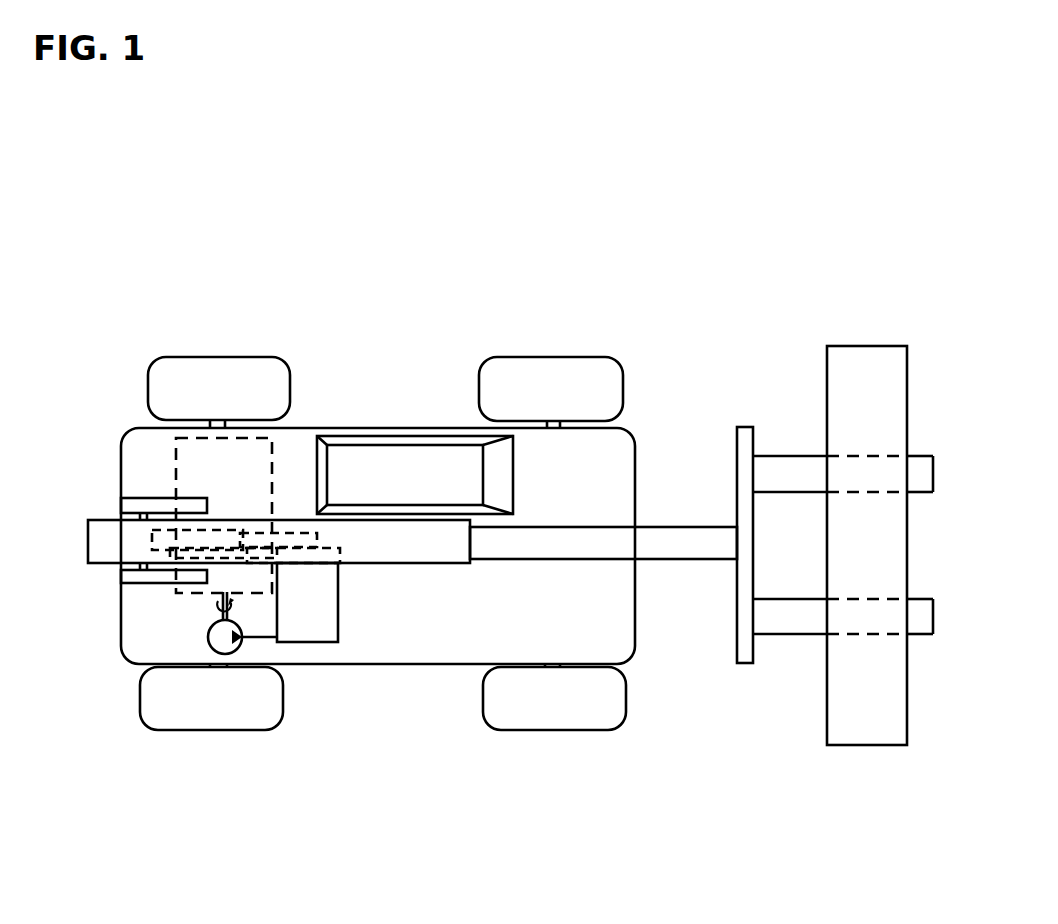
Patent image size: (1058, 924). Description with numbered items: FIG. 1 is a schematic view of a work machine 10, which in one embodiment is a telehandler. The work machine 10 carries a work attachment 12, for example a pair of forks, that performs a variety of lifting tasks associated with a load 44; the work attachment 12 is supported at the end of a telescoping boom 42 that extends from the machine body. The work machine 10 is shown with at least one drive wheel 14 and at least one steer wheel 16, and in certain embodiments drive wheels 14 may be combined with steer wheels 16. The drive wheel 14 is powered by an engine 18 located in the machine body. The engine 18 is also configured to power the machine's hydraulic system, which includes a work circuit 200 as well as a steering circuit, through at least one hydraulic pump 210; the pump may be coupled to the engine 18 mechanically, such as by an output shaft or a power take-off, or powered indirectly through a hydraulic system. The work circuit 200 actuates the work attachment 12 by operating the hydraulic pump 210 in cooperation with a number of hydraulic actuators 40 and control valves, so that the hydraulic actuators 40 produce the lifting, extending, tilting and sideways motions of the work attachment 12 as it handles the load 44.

The work machine 10 is at (108, 258).
The work attachment 12 is at (737, 427).
The drive wheel 14 is at (160, 358).
The steer wheel 16 is at (490, 358).
The engine 18 is at (175, 448).
The hydraulic actuators 40 is at (152, 540).
The telescoping boom 42 is at (640, 562).
The load 44 is at (855, 745).
The work circuit 200 is at (314, 660).
The hydraulic pump 210 is at (208, 645).